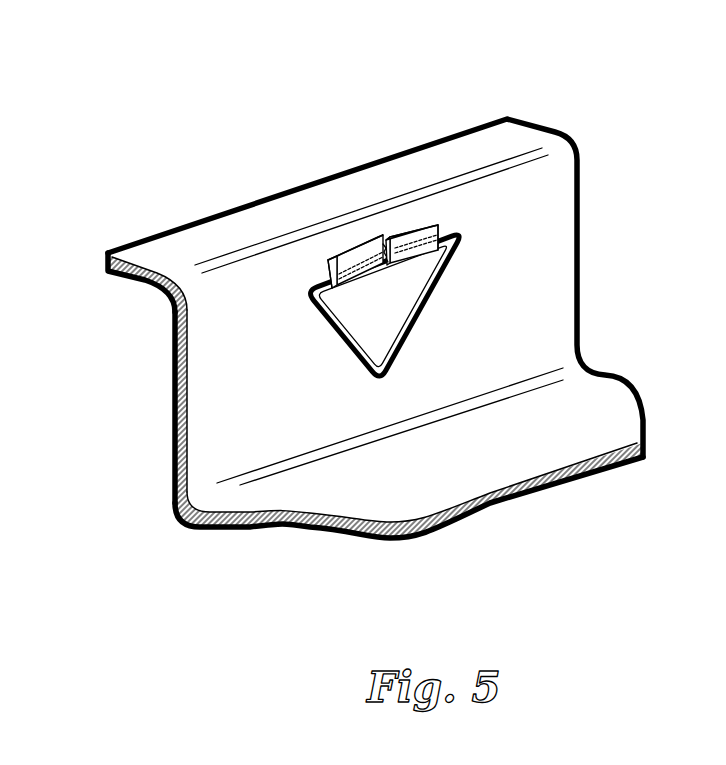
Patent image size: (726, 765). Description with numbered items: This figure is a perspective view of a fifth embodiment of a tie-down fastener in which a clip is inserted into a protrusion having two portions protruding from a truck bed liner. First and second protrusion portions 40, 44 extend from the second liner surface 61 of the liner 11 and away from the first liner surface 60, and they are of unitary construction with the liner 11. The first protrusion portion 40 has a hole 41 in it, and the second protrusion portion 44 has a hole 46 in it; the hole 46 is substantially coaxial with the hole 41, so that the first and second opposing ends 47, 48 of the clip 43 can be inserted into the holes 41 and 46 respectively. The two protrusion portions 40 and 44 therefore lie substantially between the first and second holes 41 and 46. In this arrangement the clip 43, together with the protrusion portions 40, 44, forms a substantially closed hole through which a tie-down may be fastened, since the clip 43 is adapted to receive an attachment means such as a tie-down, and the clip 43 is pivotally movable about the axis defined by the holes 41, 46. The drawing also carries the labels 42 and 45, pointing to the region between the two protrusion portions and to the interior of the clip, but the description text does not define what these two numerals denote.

The liner 11 is at (542, 207).
The first protrusion portion 40 is at (355, 253).
The hole 41 is at (327, 262).
The slot between blocks 42 is at (383, 248).
The clip 43 is at (437, 295).
The second protrusion portion 44 is at (418, 226).
The gap 45 is at (388, 252).
The hole 46 is at (447, 228).
The first opposing end 47 is at (368, 257).
The second opposing end 48 is at (430, 238).
The first liner surface 60 is at (173, 345).
The second liner surface 61 is at (215, 393).